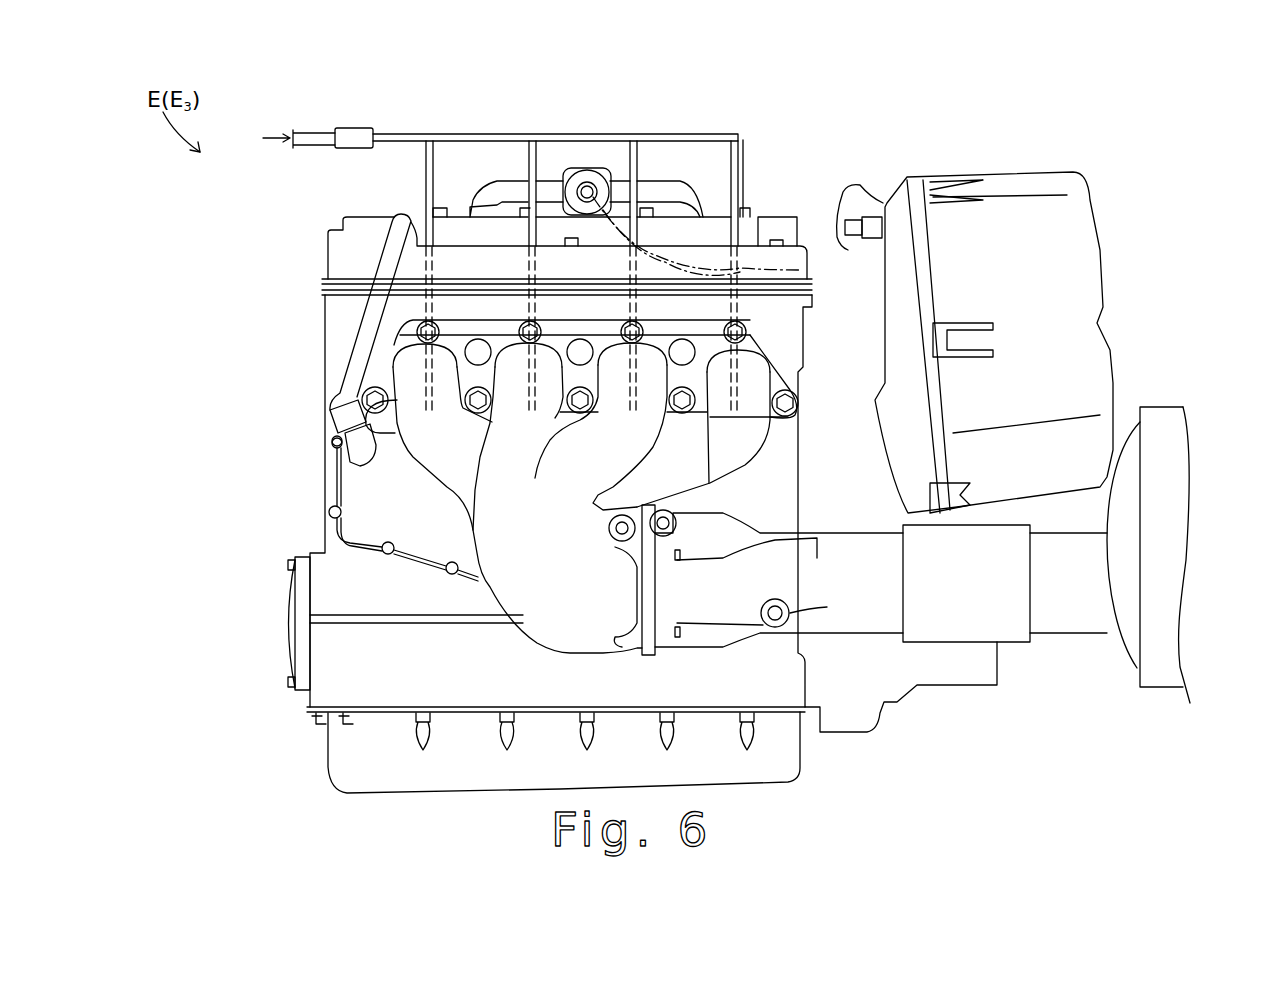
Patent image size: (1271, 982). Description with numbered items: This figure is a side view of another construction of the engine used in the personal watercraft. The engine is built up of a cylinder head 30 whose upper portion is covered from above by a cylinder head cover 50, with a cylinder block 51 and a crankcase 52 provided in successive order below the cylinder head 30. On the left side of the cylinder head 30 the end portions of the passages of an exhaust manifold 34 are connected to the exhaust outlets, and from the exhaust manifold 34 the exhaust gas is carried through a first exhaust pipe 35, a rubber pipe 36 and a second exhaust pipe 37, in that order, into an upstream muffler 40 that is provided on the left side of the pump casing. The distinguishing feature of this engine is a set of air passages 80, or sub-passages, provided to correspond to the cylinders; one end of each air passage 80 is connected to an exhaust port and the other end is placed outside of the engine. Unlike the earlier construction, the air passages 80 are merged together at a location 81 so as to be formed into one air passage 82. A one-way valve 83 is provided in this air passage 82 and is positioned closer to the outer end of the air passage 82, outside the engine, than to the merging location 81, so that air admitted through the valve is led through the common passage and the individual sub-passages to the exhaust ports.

The cylinder head 30 is at (322, 340).
The exhaust manifold 34 is at (508, 590).
The first exhaust pipe 35 is at (880, 633).
The rubber pipe 36 is at (1008, 636).
The second exhaust pipe 37 is at (1063, 627).
The upstream muffler 40 is at (1127, 648).
The cylinder head cover 50 is at (324, 258).
The cylinder block 51 is at (330, 470).
The crankcase 52 is at (307, 652).
The air passages 80 is at (437, 165).
The location 81 is at (432, 137).
The air passage 82 is at (315, 132).
The one-way valve 83 is at (357, 148).